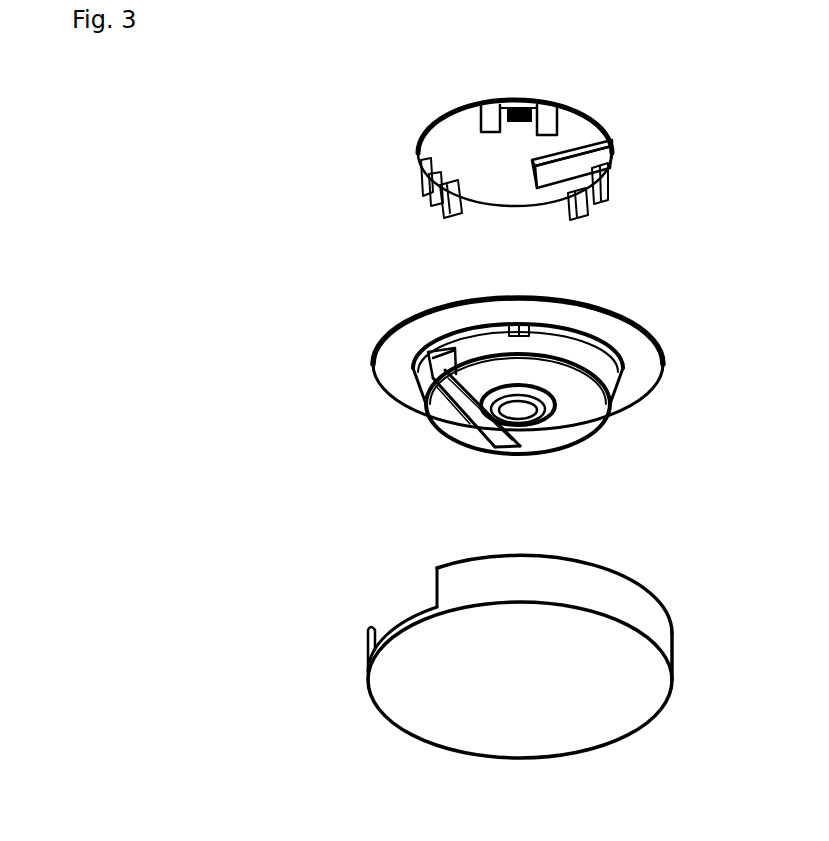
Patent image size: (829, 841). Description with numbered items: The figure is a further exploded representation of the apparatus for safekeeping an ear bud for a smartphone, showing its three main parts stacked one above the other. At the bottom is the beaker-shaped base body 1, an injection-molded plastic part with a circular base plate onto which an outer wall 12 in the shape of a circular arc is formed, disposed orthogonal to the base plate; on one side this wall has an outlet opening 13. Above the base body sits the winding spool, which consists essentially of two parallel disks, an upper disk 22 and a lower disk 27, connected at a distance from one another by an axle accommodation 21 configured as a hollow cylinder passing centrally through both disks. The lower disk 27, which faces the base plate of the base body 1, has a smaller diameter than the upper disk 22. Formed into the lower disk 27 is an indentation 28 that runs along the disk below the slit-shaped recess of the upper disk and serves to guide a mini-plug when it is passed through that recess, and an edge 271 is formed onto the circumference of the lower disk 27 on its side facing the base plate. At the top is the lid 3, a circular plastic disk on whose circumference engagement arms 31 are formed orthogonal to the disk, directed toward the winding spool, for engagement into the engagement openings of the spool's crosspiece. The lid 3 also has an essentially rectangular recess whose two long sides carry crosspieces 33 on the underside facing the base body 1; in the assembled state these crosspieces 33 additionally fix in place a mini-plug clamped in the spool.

The base body 1 is at (648, 683).
The outer wall 12 is at (638, 603).
The outlet opening 13 is at (400, 604).
The axle accommodation 21 is at (548, 420).
The upper disk 22 is at (652, 377).
The lower disk 27 is at (445, 415).
The edge 271 is at (463, 448).
The indentation 28 is at (505, 440).
The lid 3 is at (452, 140).
The engagement arms 31 is at (521, 101).
The crosspieces 33 is at (613, 148).